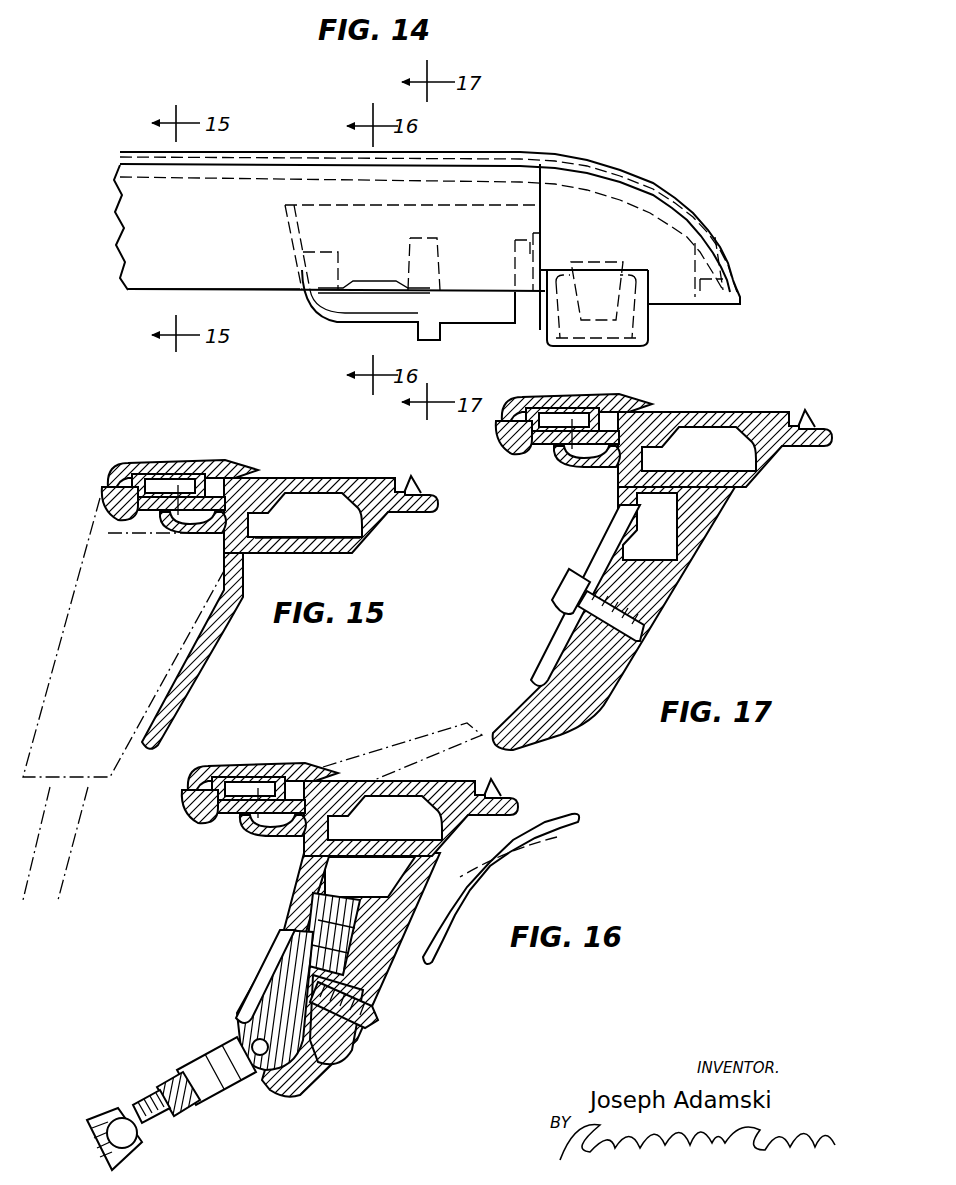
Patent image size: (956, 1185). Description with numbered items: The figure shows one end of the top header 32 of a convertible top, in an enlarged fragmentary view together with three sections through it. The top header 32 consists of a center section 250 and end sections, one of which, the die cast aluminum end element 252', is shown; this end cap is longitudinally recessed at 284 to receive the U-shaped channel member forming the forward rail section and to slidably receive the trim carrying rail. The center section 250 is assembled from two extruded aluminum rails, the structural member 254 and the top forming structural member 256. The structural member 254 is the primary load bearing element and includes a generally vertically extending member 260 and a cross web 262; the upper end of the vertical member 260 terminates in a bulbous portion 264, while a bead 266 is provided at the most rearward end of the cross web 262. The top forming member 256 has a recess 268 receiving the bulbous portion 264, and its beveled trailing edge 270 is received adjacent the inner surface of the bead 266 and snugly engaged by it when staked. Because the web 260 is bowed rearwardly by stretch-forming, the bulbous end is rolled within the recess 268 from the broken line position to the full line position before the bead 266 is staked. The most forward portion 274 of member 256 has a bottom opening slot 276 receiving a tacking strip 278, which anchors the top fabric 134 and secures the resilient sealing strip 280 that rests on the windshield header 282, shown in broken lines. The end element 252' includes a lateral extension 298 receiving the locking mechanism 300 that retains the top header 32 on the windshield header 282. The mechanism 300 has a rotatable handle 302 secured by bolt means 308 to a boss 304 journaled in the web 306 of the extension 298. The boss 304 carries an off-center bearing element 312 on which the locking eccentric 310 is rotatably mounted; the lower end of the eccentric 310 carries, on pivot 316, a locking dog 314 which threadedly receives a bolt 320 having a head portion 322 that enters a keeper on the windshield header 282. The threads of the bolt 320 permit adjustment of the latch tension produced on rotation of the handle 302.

In FIG. 14, the top header 32 is at (506, 116).
In FIG. 14, the center section 250 is at (130, 298).
In FIG. 14, the end section 252' is at (466, 210).
In FIG. 14, the lateral extension 298 is at (313, 308).
In FIG. 14, the recess 284 is at (562, 328).
In FIG. 15, the windshield header 282 is at (90, 602).
In FIG. 15, the generally vertically extending member 260 is at (232, 625).
In FIG. 16, the generally vertically extending member 260 is at (298, 907).
In FIG. 15, the top forming structural member 256 is at (318, 476).
In FIG. 17, the top forming structural member 256 is at (675, 592).
In FIG. 16, the top forming structural member 256 is at (518, 744).
In FIG. 15, the cross web 262 is at (337, 550).
In FIG. 15, the bead 266 is at (414, 480).
In FIG. 16, the bead 266 is at (455, 773).
In FIG. 15, the bulbous portion 264 is at (246, 479).
In FIG. 17, the structural member 254 is at (618, 519).
In FIG. 17, the recess 268 is at (675, 592).
In FIG. 17, the trailing edge 270 is at (796, 400).
In FIG. 16, the most forward portion 274 is at (120, 474).
In FIG. 16, the top fabric 134 is at (178, 459).
In FIG. 16, the resilient sealing strip 280 is at (112, 522).
In FIG. 16, the bottom opening slot 276 is at (142, 527).
In FIG. 16, the tacking strip 278 is at (155, 527).
In FIG. 16, the web 306 is at (390, 886).
In FIG. 16, the off-center bearing element 312 is at (308, 947).
In FIG. 16, the rotatable handle 302 is at (448, 895).
In FIG. 16, the locking eccentric 310 is at (262, 1020).
In FIG. 16, the bolt means 308 is at (372, 1028).
In FIG. 16, the boss 304 is at (333, 1045).
In FIG. 16, the head portion 322 is at (124, 1116).
In FIG. 16, the locking dog 314 is at (190, 1106).
In FIG. 16, the pivot 316 is at (262, 1056).
In FIG. 16, the locking mechanism 300 is at (303, 1078).
In FIG. 16, the bolt 320 is at (155, 1137).